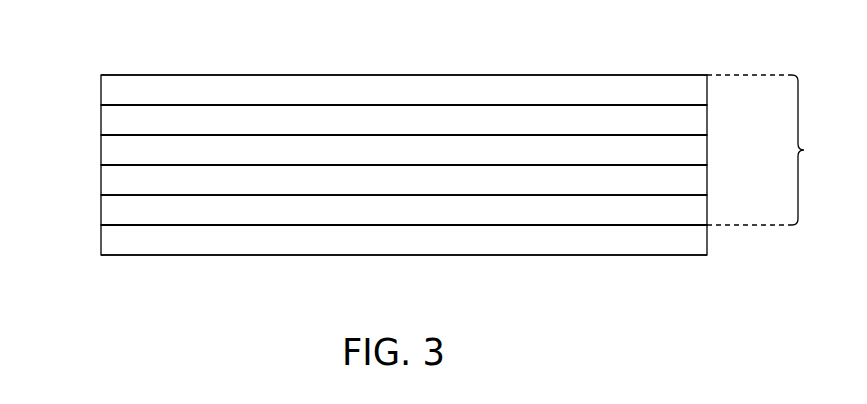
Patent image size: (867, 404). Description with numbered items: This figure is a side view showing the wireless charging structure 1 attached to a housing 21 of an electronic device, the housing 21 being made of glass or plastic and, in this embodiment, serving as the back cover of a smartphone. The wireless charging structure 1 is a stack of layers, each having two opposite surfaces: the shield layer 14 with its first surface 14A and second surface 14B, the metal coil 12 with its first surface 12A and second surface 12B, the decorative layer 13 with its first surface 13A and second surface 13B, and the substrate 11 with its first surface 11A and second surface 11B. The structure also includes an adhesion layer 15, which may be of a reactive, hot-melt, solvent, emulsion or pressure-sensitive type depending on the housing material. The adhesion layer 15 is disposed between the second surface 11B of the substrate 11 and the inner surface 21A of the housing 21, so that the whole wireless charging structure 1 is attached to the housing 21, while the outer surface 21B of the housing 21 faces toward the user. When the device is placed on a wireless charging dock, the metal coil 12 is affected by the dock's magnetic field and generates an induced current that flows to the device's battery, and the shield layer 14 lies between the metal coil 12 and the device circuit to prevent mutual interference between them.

The wireless charging structure 1 is at (763, 150).
The substrate 11 is at (494, 181).
The first surface of the substrate 11A is at (698, 165).
The second surface of the substrate 11B is at (698, 195).
The metal coil 12 is at (632, 119).
The first surface of the metal coil 12A is at (698, 105).
The second surface of the metal coil 12B is at (698, 135).
The decorative layer 13 is at (253, 151).
The first surface of the decorative layer 13A is at (109, 135).
The second surface of the decorative layer 13B is at (109, 165).
The shield layer 14 is at (149, 91).
The first surface of the shield layer 14A is at (109, 75).
The second surface of the shield layer 14B is at (109, 105).
The adhesion layer 15 is at (206, 209).
The housing 21 is at (581, 238).
The inner surface of the housing 21A is at (691, 224).
The outer surface of the housing 21B is at (698, 255).